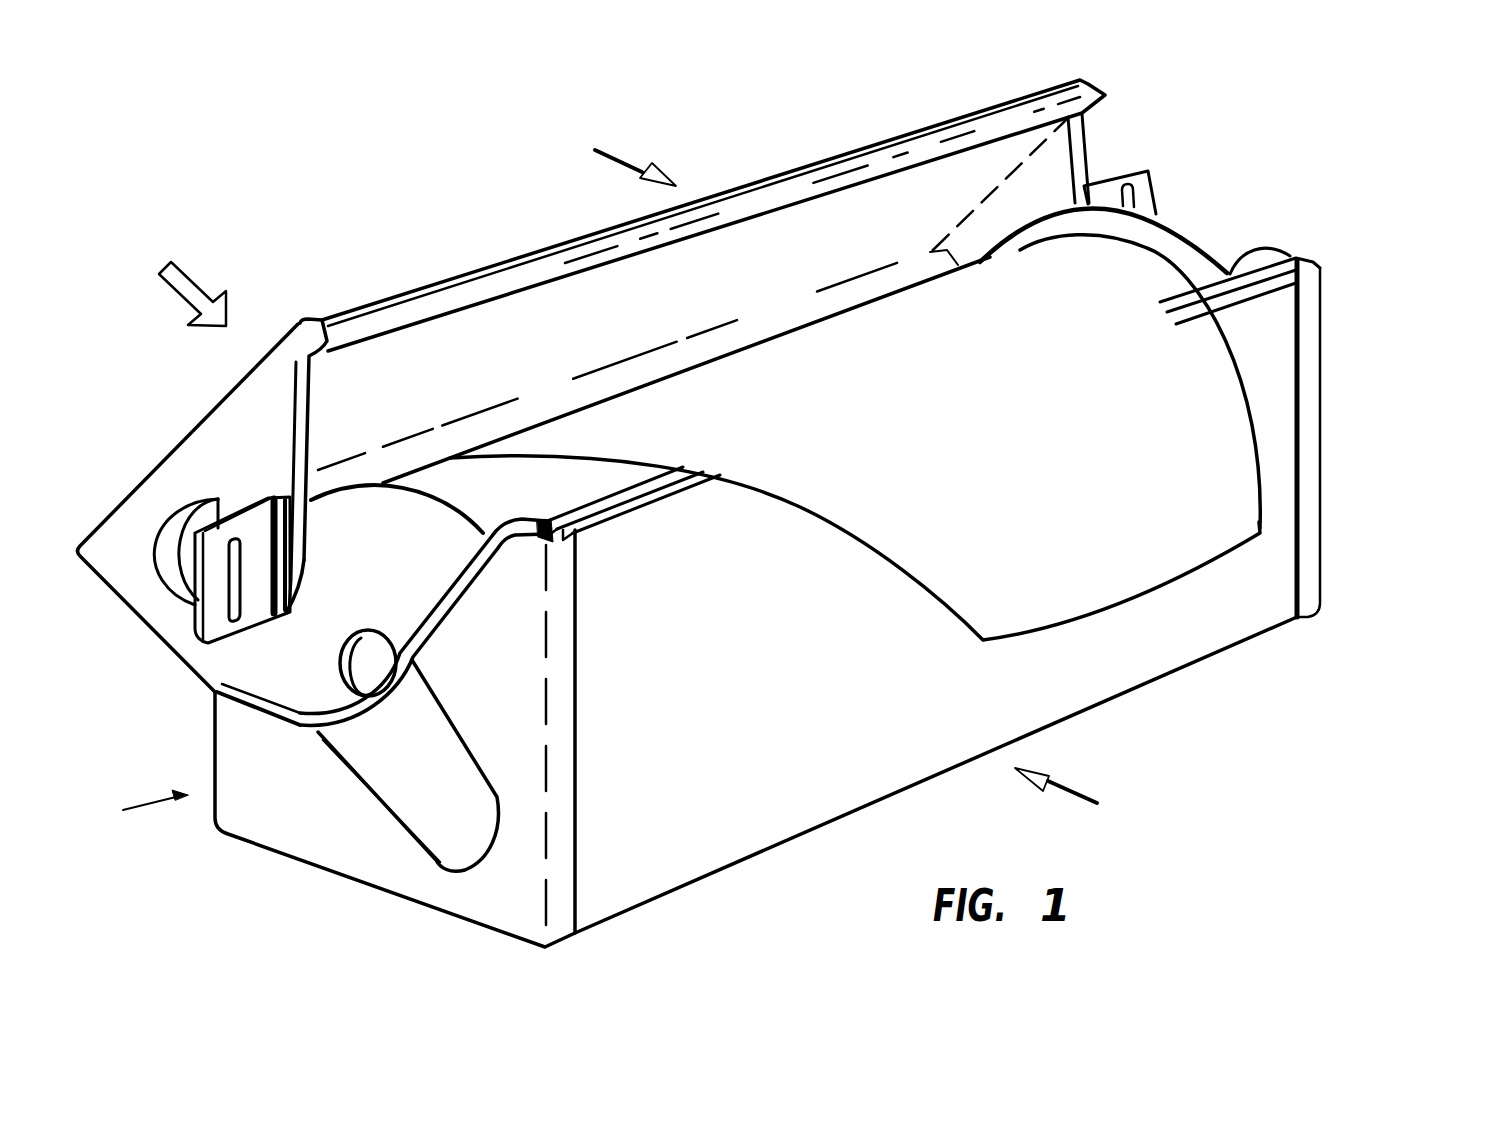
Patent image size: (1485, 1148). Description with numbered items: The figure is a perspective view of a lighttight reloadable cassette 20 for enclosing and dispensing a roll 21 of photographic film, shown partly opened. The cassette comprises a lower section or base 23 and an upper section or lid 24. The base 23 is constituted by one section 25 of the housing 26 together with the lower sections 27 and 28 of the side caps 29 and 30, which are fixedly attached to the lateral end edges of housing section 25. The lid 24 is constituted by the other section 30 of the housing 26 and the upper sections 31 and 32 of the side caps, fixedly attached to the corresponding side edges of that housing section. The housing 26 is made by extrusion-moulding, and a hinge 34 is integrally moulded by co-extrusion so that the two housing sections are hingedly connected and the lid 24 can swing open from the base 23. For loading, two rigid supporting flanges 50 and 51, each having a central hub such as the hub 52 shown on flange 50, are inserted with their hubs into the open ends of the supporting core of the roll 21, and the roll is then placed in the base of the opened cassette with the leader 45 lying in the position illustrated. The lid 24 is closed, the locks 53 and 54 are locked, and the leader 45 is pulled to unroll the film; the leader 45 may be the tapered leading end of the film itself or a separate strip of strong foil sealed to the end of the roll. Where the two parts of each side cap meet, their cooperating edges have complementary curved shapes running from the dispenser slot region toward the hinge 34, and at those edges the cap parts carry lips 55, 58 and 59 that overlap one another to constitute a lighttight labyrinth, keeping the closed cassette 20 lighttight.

The lighttight reloadable cassette 20 is at (193, 291).
The roll of photographic film 21 is at (1147, 253).
The base 23 is at (1073, 802).
The lid 24 is at (637, 168).
The housing section 25 is at (758, 834).
The housing 26 is at (1113, 697).
The lower section of side cap 27 is at (352, 847).
The lower section of side cap 28 is at (1310, 507).
The side cap 29 is at (153, 806).
The side cap 30 is at (483, 328).
The upper section of side cap 31 is at (127, 503).
The upper section of side cap 32 is at (1053, 150).
The hinge 34 is at (213, 694).
The leader 45 is at (982, 613).
The supporting flange 50 is at (384, 501).
The supporting flange 51 is at (1205, 260).
The hub 52 is at (350, 674).
The lock 53 is at (220, 607).
The lock 54 is at (1107, 187).
The lip 55 is at (454, 584).
The lip 58 is at (300, 447).
The lip 59 is at (292, 459).